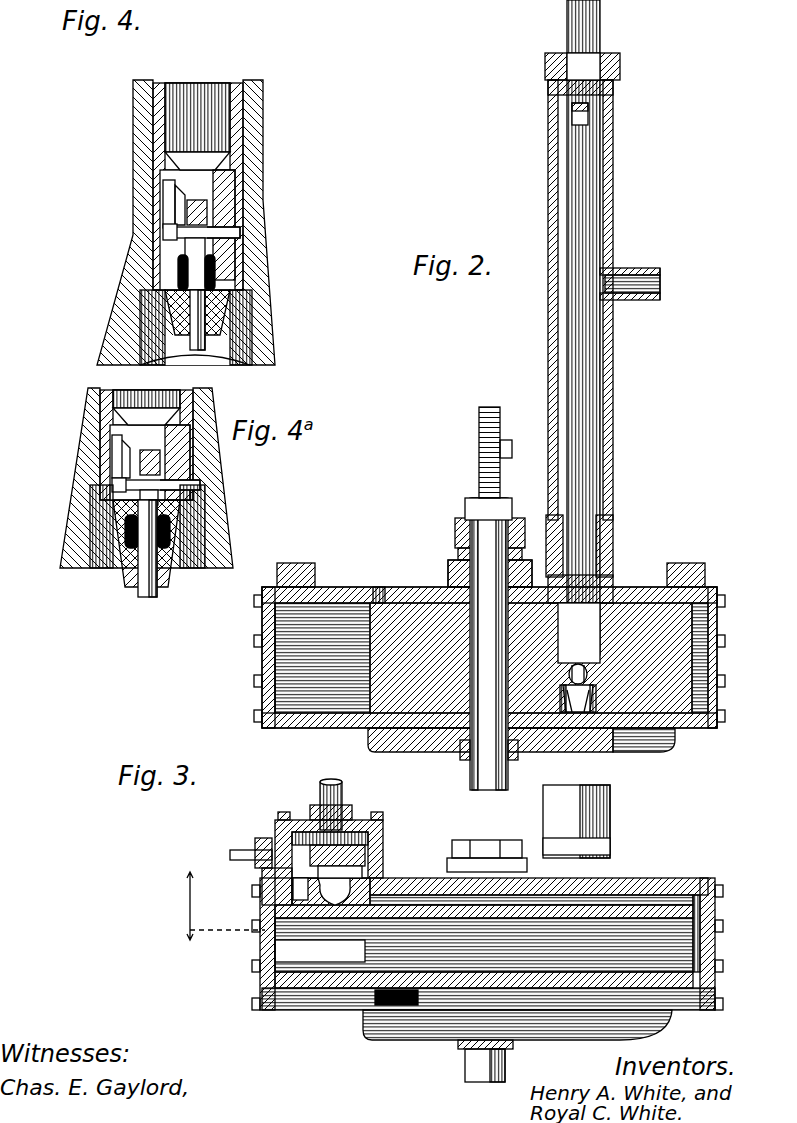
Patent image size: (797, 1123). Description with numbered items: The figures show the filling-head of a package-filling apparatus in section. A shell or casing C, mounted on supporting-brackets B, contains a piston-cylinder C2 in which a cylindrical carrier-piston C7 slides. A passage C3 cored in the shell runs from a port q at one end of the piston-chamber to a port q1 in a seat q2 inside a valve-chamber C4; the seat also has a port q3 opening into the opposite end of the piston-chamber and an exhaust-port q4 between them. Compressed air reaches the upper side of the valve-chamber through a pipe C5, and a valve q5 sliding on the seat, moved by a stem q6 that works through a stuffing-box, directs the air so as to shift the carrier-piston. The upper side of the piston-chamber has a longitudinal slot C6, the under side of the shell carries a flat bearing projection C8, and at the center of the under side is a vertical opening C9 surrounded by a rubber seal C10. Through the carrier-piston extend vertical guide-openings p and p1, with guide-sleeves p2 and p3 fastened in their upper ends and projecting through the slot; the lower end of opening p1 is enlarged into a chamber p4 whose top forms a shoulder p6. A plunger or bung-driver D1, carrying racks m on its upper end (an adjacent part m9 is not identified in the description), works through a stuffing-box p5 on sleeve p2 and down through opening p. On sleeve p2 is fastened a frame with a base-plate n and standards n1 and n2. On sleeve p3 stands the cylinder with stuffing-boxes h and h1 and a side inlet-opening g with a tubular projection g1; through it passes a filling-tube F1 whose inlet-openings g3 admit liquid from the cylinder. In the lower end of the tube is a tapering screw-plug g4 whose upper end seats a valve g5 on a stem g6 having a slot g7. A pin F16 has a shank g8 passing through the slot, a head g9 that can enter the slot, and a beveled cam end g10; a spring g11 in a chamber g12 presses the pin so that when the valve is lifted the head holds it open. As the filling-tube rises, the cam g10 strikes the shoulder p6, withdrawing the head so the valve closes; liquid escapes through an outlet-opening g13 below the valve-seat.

In FIG. 2, the shell or casing or filling-head C is at (292, 580).
In FIG. 2, the piston-cylinder C2 is at (282, 722).
In FIG. 3, the piston-cylinder C2 is at (322, 1000).
In FIG. 3, the passage C3 is at (648, 895).
In FIG. 3, the valve-chamber C4 is at (386, 842).
In FIG. 3, the pipe C5 is at (326, 780).
In FIG. 2, the slot C6 is at (378, 588).
In FIG. 4, the cylindrical piston or carrier C7 is at (264, 172).
In FIG. 4A, the cylindrical piston or carrier C7 is at (100, 490).
In FIG. 2, the cylindrical piston or carrier C7 is at (717, 625).
In FIG. 3, the cylindrical piston or carrier C7 is at (580, 962).
In FIG. 2, the projection C8 is at (400, 752).
In FIG. 3, the projection C8 is at (440, 1040).
In FIG. 2, the vertical opening C9 is at (462, 752).
In FIG. 2, the ring or seal C10 is at (513, 755).
In FIG. 3, the ring or seal C10 is at (513, 1048).
In FIG. 3, the plunger D1 is at (490, 1082).
In FIG. 2, the supporting-brackets B is at (278, 572).
In FIG. 4, the filling-tube F1 is at (244, 100).
In FIG. 4A, the filling-tube F1 is at (110, 410).
In FIG. 2, the filling-tube F1 is at (600, 170).
In FIG. 4, the pin F16 is at (240, 233).
In FIG. 4A, the pin F16 is at (190, 484).
In FIG. 2, the inlet-opening g is at (625, 290).
In FIG. 2, the tubular projection g1 is at (660, 278).
In FIG. 2, the inlet-openings g3 is at (588, 112).
In FIG. 4, the screw-plug g4 is at (232, 220).
In FIG. 4A, the screw-plug g4 is at (128, 572).
In FIG. 2, the screw-plug g4 is at (588, 677).
In FIG. 4, the valve g5 is at (215, 152).
In FIG. 4A, the valve g5 is at (148, 405).
In FIG. 4, the stem g6 is at (200, 340).
In FIG. 4A, the stem g6 is at (149, 597).
In FIG. 4, the longitudinal slot g7 is at (192, 258).
In FIG. 4A, the longitudinal slot g7 is at (178, 506).
In FIG. 4, the shank portion g8 is at (190, 246).
In FIG. 4A, the shank portion g8 is at (175, 498).
In FIG. 4, the head g9 is at (165, 232).
In FIG. 4A, the head g9 is at (120, 498).
In FIG. 4, the cam g10 is at (215, 240).
In FIG. 4A, the cam g10 is at (192, 488).
In FIG. 4, the spring g11 is at (175, 210).
In FIG. 4A, the spring g11 is at (125, 456).
In FIG. 4, the chamber g12 is at (163, 185).
In FIG. 4A, the chamber g12 is at (115, 440).
In FIG. 4, the outlet-opening g13 is at (178, 292).
In FIG. 4A, the outlet-opening g13 is at (180, 560).
In FIG. 2, the outlet-opening g13 is at (565, 690).
In FIG. 2, the stuffing-box h is at (612, 535).
In FIG. 2, the stuffing-box h1 is at (618, 60).
In FIG. 2, the racks m is at (479, 447).
In FIG. 2, the rack pin m9 is at (506, 440).
In FIG. 2, the base-plate n is at (452, 572).
In FIG. 3, the base-plate n is at (527, 866).
In FIG. 3, the standard n1 is at (455, 848).
In FIG. 3, the standard n2 is at (521, 848).
In FIG. 2, the guide-opening p is at (470, 668).
In FIG. 4, the guide-opening p1 is at (240, 268).
In FIG. 4A, the guide-opening p1 is at (146, 445).
In FIG. 2, the guide-opening p1 is at (600, 660).
In FIG. 2, the guide-sleeve p2 is at (458, 598).
In FIG. 2, the guide-sleeve p3 is at (613, 580).
In FIG. 4, the chamber p4 is at (245, 325).
In FIG. 4A, the chamber p4 is at (95, 545).
In FIG. 2, the chamber p4 is at (596, 700).
In FIG. 2, the stuffing-box p5 is at (466, 520).
In FIG. 4, the shoulder p6 is at (220, 283).
In FIG. 3, the port q is at (716, 930).
In FIG. 3, the port q1 is at (365, 872).
In FIG. 3, the seat q2 is at (375, 858).
In FIG. 3, the port q3 is at (265, 890).
In FIG. 3, the exhaust-port q4 is at (262, 910).
In FIG. 3, the valve q5 is at (352, 822).
In FIG. 3, the stem q6 is at (264, 838).